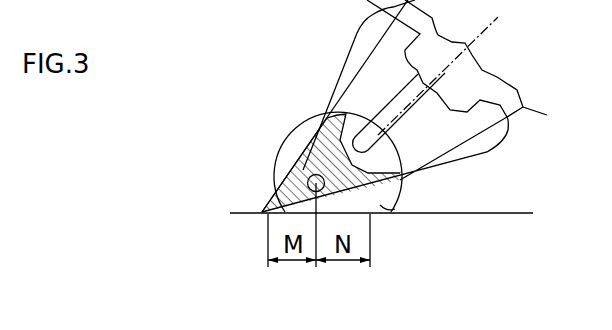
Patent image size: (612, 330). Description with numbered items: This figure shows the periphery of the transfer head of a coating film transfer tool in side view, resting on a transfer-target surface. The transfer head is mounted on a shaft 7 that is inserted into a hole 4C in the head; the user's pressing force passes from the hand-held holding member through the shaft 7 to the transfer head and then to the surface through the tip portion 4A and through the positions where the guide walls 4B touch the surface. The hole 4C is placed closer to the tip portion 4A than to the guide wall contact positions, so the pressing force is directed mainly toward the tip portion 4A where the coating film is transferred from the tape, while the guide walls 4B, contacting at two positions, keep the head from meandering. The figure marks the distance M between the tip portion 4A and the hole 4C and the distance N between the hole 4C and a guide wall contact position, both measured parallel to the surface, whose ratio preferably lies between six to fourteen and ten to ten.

The shaft 7 is at (300, 172).
The tip portion 4A is at (260, 214).
The guide walls 4B is at (388, 213).
The hole 4C is at (306, 178).